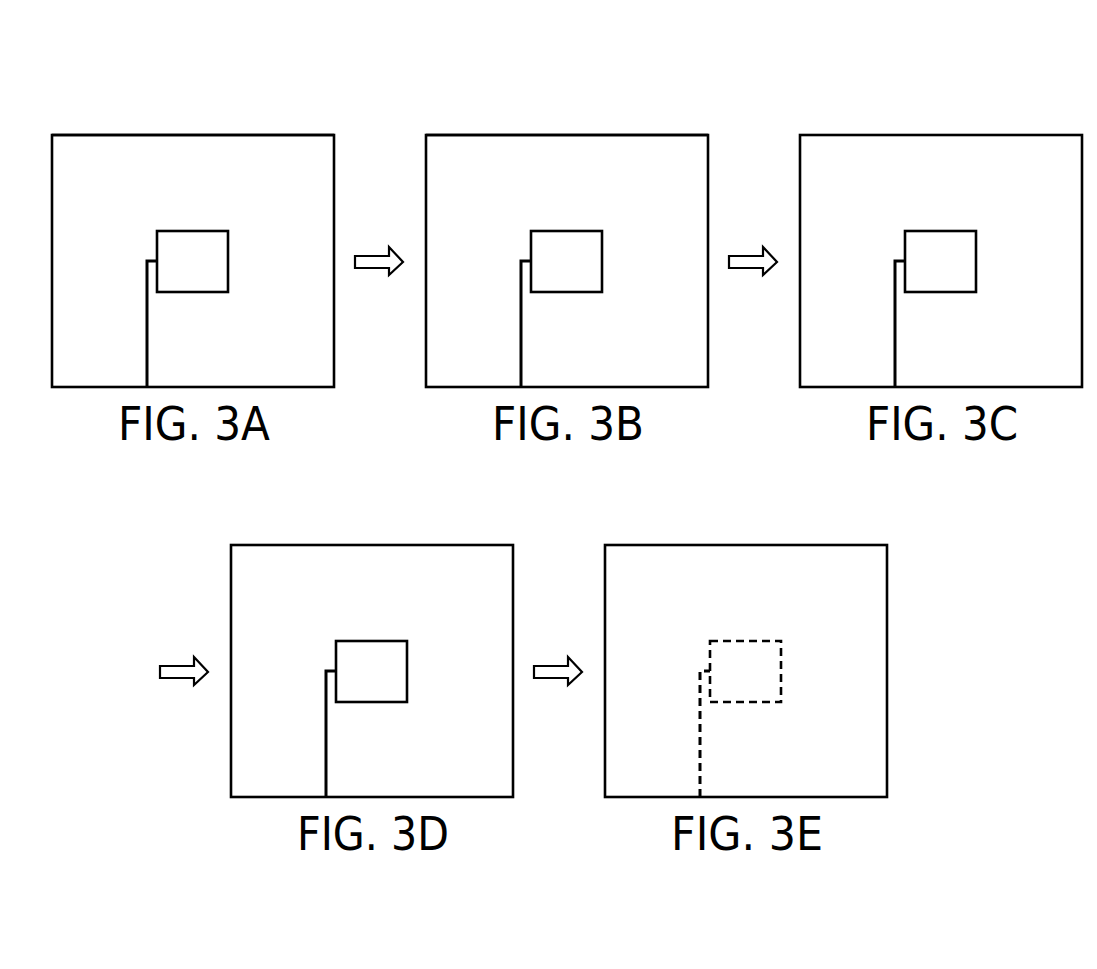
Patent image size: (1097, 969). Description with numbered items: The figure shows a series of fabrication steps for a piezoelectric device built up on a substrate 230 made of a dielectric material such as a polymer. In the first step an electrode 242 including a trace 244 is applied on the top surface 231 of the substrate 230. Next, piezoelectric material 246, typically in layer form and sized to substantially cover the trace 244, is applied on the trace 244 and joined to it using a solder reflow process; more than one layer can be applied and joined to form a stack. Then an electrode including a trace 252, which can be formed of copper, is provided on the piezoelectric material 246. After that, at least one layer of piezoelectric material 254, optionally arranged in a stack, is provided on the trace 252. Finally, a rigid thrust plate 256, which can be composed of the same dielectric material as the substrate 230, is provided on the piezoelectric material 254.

In FIG. 3A, the substrate 230 is at (278, 133).
In FIG. 3B, the substrate 230 is at (567, 222).
In FIG. 3C, the substrate 230 is at (941, 222).
In FIG. 3D, the substrate 230 is at (372, 632).
In FIG. 3A, the top surface 231 is at (134, 148).
In FIG. 3B, the top surface 231 is at (567, 102).
In FIG. 3A, the electrode 242 is at (147, 341).
In FIG. 3B, the electrode 242 is at (559, 324).
In FIG. 3C, the electrode 242 is at (933, 324).
In FIG. 3D, the electrode 242 is at (364, 734).
In FIG. 3E, the electrode 242 is at (738, 734).
In FIG. 3A, the trace 244 is at (213, 277).
In FIG. 3B, the piezoelectric material 246 is at (600, 261).
In FIG. 3C, the trace 252 is at (974, 261).
In FIG. 3D, the piezoelectric material 254 is at (405, 671).
In FIG. 3E, the piezoelectric material 254 is at (779, 671).
In FIG. 3E, the thrust plate 256 is at (746, 632).